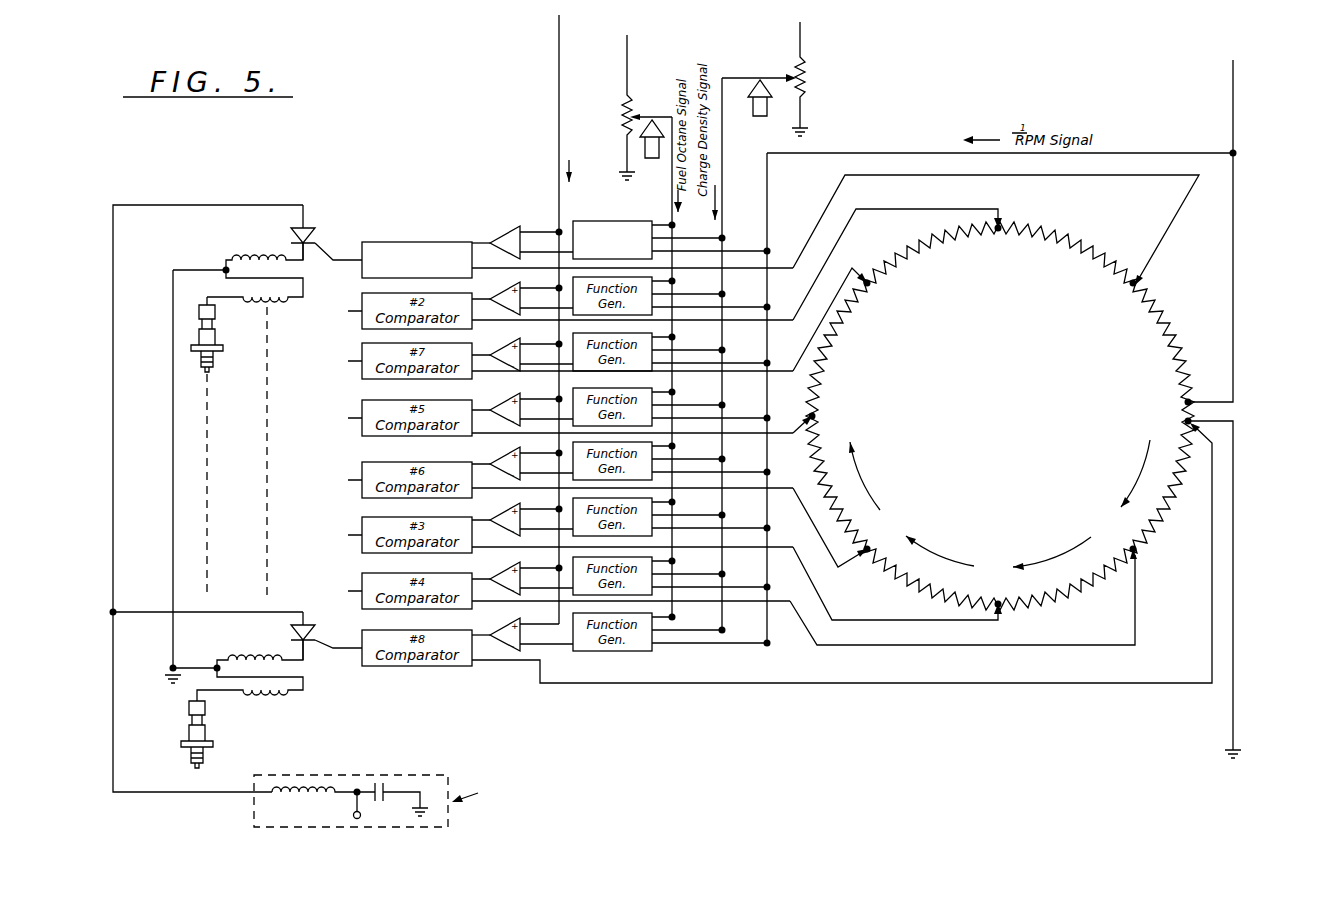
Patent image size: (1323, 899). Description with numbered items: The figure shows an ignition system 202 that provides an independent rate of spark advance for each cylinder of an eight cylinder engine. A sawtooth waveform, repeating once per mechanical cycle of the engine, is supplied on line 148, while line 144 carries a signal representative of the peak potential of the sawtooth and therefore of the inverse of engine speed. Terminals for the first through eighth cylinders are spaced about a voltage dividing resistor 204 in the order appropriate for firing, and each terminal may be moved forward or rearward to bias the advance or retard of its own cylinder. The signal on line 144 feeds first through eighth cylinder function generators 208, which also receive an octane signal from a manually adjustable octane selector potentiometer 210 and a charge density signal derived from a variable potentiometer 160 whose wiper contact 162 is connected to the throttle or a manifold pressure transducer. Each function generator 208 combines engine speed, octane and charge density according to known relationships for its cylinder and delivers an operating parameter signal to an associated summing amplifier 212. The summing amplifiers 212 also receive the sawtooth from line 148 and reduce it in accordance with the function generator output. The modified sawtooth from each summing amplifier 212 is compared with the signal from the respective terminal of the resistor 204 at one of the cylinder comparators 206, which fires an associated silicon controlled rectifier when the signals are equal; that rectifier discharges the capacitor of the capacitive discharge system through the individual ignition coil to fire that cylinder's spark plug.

The line 144 is at (1233, 88).
The line 148 is at (559, 28).
The variable potentiometer 160 is at (803, 76).
The wiper contact 162 is at (780, 60).
The ignition system 202 is at (386, 167).
The voltage dividing resistor 204 is at (1026, 405).
The cylinder comparators 206 is at (408, 233).
The cylinder function generators 208 is at (618, 214).
The octane selector potentiometer 210 is at (643, 95).
The summing amplifiers 212 is at (517, 229).